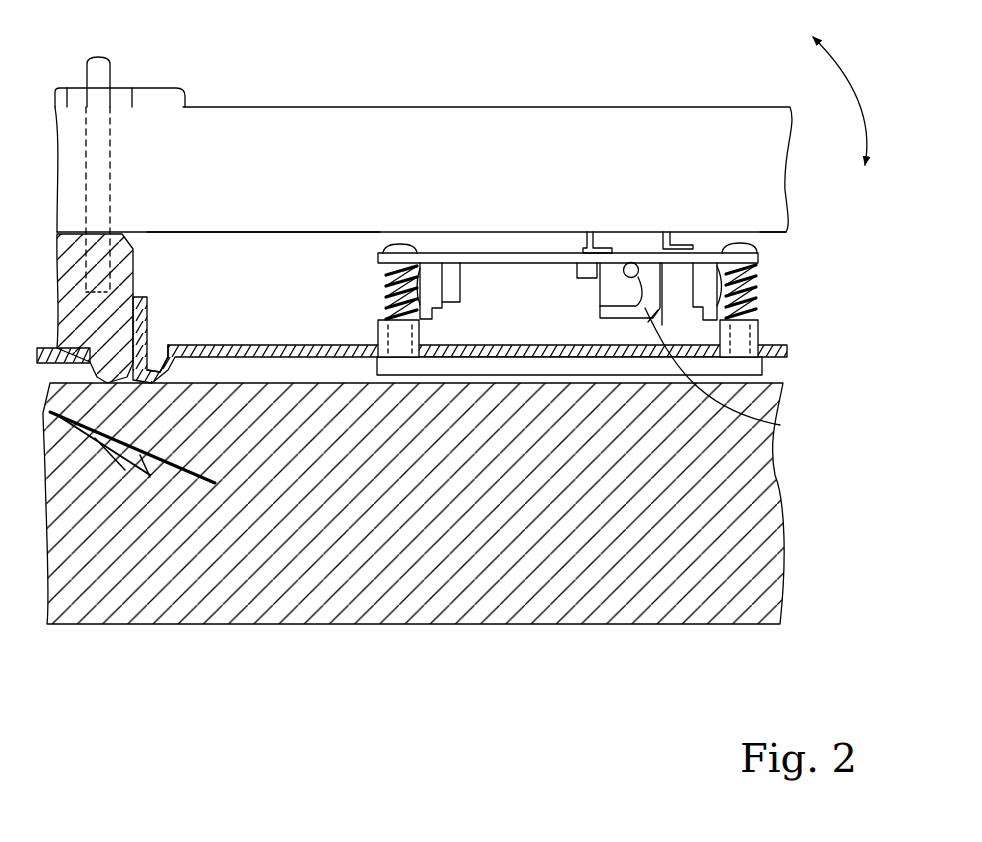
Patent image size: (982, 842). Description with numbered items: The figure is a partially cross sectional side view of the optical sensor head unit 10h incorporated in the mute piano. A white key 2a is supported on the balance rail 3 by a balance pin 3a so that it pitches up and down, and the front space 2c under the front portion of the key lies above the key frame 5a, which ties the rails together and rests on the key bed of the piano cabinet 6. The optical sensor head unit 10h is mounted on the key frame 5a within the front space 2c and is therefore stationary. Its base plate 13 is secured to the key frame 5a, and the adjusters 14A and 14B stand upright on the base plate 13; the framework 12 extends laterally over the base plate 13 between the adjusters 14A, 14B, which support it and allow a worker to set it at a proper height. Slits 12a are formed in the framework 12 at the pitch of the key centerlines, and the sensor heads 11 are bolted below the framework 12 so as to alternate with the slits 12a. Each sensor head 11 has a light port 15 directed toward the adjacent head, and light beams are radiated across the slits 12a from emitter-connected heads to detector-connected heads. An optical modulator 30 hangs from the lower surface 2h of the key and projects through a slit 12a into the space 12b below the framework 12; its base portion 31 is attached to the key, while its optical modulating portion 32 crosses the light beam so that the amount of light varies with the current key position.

The white key 2a is at (564, 124).
The front space 2c is at (240, 303).
The lower surface 2h is at (768, 233).
The balance rail 3 is at (133, 265).
The balance pin 3a is at (110, 75).
The key frame 5a is at (176, 347).
The piano cabinet 6 is at (766, 448).
The optical sensor head unit 10h is at (366, 310).
The sensor head 11 is at (593, 269).
The framework 12 is at (509, 253).
The slit 12a is at (638, 263).
The space 12b is at (495, 297).
The base plate 13 is at (757, 365).
The adjuster 14A is at (376, 292).
The adjuster 14B is at (765, 289).
The light port 15 is at (600, 316).
The optical modulator 30 is at (683, 243).
The base portion 31 is at (574, 233).
The optical modulating portion 32 is at (767, 422).